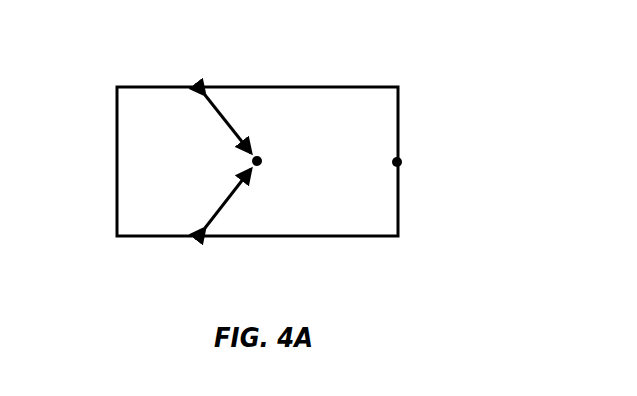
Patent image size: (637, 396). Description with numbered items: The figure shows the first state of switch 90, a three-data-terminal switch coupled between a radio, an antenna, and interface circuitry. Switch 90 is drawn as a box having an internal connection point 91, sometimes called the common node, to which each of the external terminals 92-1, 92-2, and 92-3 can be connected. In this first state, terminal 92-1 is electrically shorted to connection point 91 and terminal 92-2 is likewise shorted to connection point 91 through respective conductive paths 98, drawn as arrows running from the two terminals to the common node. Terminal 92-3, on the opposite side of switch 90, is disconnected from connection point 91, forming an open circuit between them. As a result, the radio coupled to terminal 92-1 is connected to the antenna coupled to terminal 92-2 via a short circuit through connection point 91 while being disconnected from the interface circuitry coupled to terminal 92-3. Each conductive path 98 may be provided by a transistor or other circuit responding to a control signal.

The switch 90 is at (126, 154).
The connection point 91 is at (262, 161).
The first data terminal 92-1 is at (199, 87).
The second data terminal 92-2 is at (199, 236).
The third data terminal 92-3 is at (402, 161).
The conductive path 98 is at (222, 122).